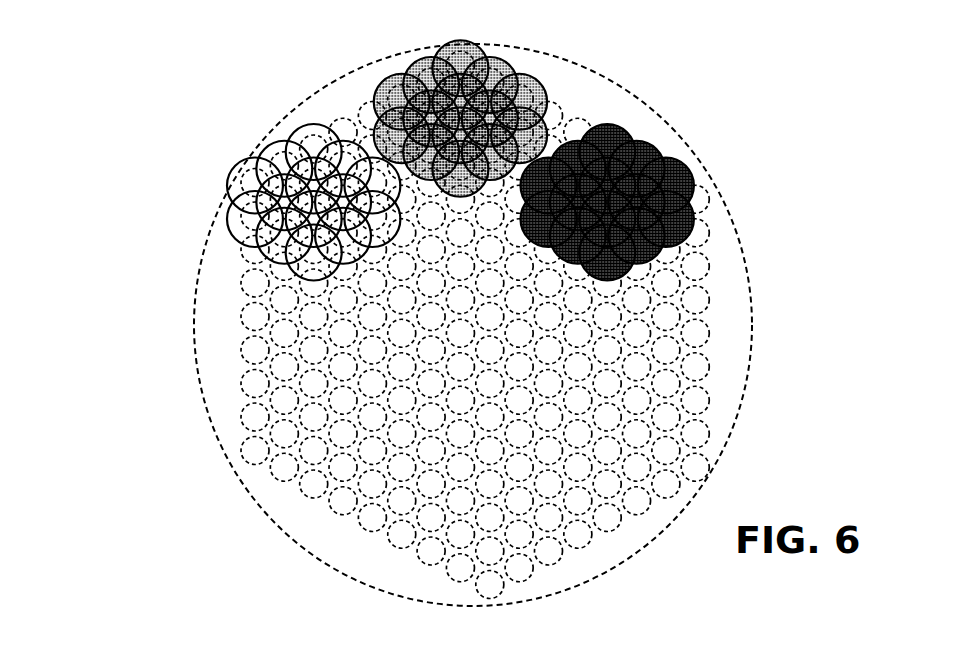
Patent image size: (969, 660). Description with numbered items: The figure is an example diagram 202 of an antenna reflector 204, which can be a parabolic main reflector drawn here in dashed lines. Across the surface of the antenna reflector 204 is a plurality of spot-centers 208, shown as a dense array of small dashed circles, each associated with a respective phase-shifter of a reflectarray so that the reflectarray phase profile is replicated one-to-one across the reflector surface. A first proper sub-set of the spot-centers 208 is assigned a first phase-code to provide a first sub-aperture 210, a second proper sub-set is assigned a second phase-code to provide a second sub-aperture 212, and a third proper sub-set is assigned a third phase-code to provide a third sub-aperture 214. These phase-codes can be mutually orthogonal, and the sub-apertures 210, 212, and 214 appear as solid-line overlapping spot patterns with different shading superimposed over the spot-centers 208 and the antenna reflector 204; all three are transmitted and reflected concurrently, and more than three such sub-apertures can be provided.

The diagram 202 is at (131, 82).
The antenna reflector 204 is at (756, 260).
The spot-centers 208 is at (335, 553).
The first sub-aperture 210 is at (222, 262).
The second sub-aperture 212 is at (558, 72).
The third sub-aperture 214 is at (645, 122).